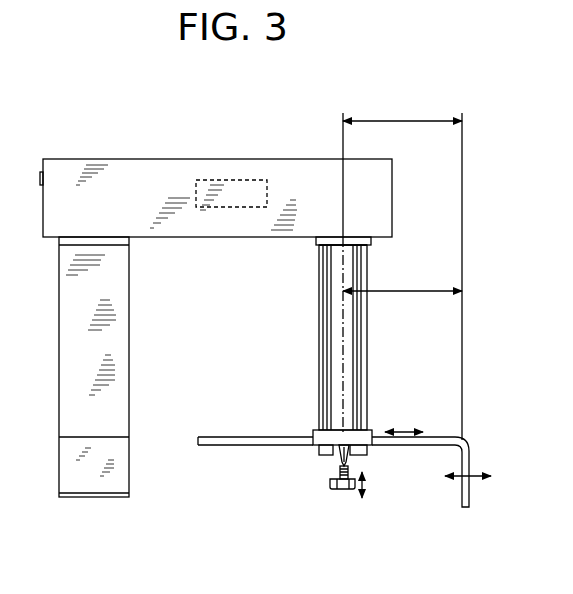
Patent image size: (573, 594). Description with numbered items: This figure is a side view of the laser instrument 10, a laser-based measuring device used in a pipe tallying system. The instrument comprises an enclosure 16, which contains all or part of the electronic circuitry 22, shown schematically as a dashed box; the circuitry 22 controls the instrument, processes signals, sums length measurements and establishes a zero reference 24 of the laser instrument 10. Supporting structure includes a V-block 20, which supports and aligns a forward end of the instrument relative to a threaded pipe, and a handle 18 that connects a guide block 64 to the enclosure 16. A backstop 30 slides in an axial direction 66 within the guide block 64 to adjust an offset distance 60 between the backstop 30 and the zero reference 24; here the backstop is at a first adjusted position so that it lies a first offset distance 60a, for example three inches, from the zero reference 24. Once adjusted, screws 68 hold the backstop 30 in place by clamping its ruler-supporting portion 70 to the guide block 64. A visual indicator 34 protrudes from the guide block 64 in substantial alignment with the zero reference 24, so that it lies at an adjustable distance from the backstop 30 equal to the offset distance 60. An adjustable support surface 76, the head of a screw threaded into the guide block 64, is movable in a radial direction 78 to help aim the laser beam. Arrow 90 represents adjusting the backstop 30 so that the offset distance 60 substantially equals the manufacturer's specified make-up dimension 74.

The laser instrument 10 is at (76, 111).
The enclosure 16 is at (200, 238).
The handle 18 is at (320, 344).
The V-block 20 is at (130, 481).
The electronic circuitry 22 is at (216, 180).
The zero reference 24 is at (340, 263).
The backstop 30 is at (460, 487).
The visual indicator 34 is at (338, 458).
The offset distance 60 is at (390, 120).
The first offset distance 60a is at (419, 123).
The guide block 64 is at (318, 430).
The axial direction 66 is at (408, 428).
The screws 68 is at (318, 452).
The ruler-supporting portion 70 is at (218, 437).
The specified make-up dimension 74 is at (392, 293).
The adjustable support surface 76 is at (342, 490).
The radial direction 78 is at (366, 490).
The arrow 90 is at (475, 472).